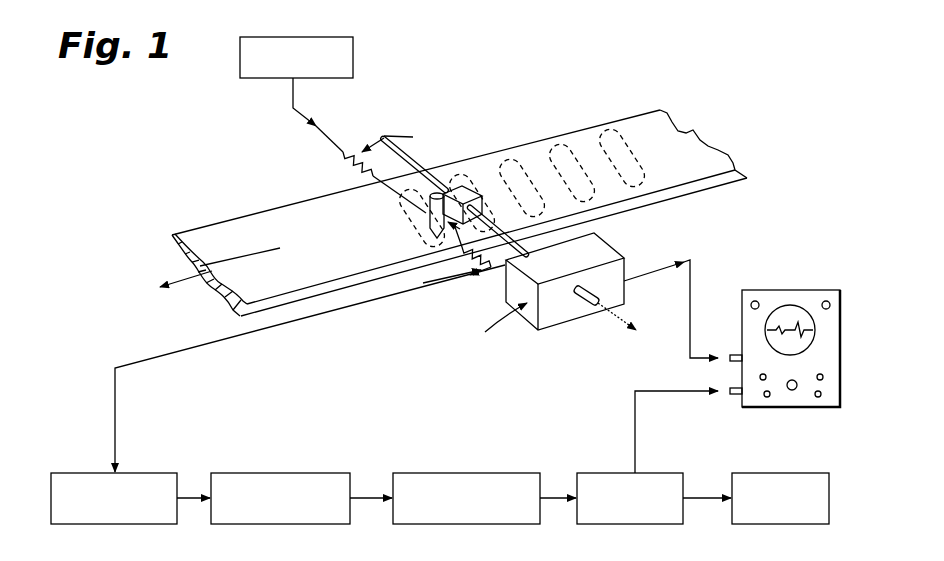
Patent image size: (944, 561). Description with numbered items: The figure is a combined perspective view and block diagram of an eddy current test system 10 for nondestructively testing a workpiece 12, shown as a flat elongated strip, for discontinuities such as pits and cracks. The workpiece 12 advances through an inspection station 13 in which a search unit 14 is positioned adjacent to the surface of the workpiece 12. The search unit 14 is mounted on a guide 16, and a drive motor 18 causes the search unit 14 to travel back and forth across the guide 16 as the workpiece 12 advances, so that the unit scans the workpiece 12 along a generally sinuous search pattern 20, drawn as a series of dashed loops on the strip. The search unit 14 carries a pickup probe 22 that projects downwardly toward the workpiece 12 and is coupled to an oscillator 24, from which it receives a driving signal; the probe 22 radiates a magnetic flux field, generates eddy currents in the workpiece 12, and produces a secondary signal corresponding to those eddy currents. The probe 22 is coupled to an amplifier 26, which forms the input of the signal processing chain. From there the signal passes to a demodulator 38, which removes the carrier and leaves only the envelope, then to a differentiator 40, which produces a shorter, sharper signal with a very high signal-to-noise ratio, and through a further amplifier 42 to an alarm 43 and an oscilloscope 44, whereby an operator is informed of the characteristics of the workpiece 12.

The eddy current test system 10 is at (706, 276).
The workpiece 12 is at (226, 230).
The inspection station 13 is at (338, 174).
The search unit 14 is at (470, 197).
The guide 16 is at (407, 160).
The drive motor 18 is at (553, 317).
The sinuous search pattern 20 is at (588, 138).
The pickup probe 22 is at (437, 237).
The oscillator 24 is at (348, 36).
The amplifier 26 is at (157, 472).
The demodulator 38 is at (307, 473).
The differentiator 40 is at (502, 473).
The amplifier 42 is at (657, 473).
The alarm 43 is at (798, 473).
The oscilloscope 44 is at (800, 291).